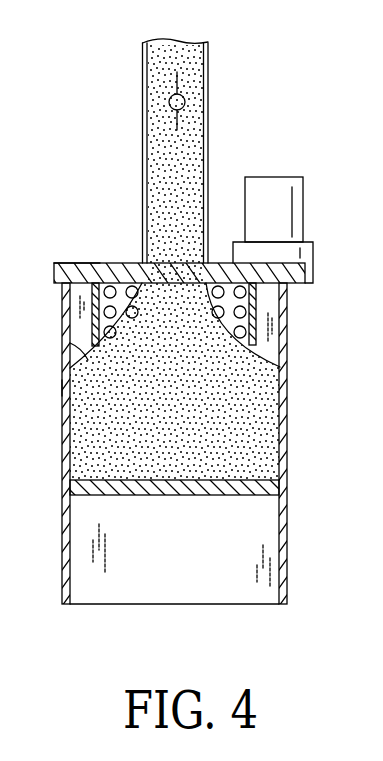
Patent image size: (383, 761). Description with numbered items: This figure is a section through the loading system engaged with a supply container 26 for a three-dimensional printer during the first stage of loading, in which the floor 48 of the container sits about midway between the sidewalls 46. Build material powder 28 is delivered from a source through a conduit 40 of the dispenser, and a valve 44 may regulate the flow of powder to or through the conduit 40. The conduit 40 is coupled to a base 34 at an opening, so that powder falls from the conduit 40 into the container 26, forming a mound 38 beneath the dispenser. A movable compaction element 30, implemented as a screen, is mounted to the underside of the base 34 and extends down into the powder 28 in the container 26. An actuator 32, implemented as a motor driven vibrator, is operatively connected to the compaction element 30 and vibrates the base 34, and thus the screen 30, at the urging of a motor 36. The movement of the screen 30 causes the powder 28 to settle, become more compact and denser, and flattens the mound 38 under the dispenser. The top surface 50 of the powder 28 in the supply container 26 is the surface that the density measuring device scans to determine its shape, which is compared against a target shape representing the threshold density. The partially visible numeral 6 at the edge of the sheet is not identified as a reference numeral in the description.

The feed tube 40 is at (142, 100).
The valve / stirrer 44 is at (185, 104).
The drive unit 36 is at (280, 183).
The cover plate 32 is at (314, 257).
The plate opening 34 is at (78, 267).
The housing wall 26 is at (63, 418).
The perforated wall 30 is at (273, 304).
The filter fabric 38 is at (134, 340).
The fabric edge 50 is at (70, 343).
The powder 28 is at (265, 433).
The piston plate 48 is at (173, 496).
The lower chamber 46 is at (258, 520).
The clipped numeral 6 is at (31, 474).